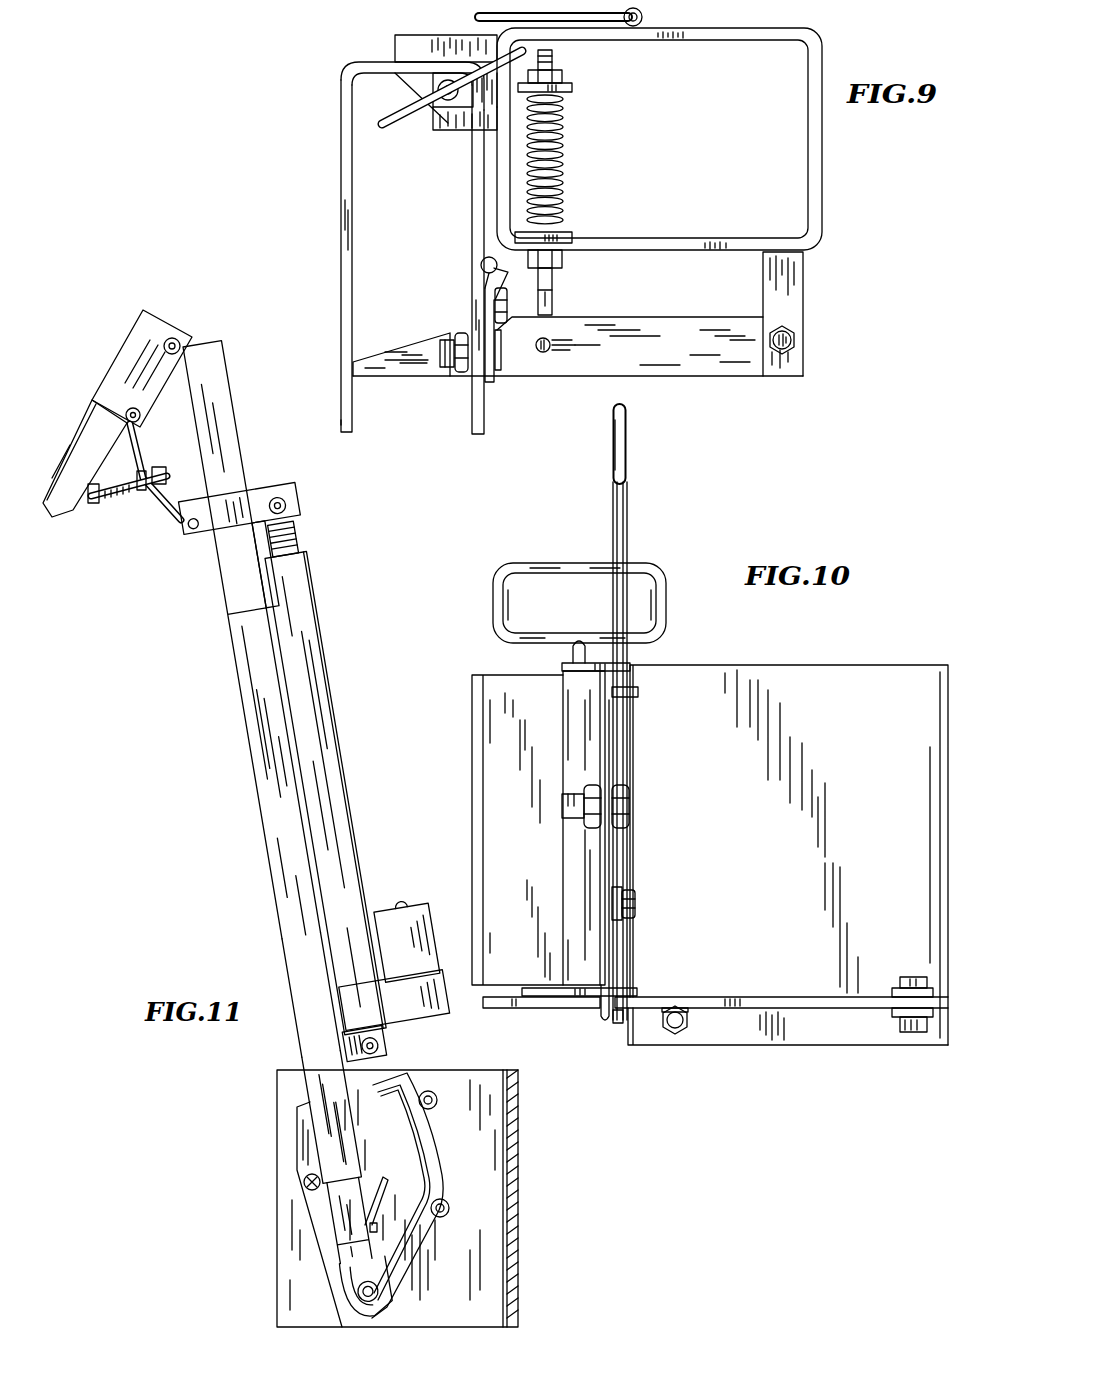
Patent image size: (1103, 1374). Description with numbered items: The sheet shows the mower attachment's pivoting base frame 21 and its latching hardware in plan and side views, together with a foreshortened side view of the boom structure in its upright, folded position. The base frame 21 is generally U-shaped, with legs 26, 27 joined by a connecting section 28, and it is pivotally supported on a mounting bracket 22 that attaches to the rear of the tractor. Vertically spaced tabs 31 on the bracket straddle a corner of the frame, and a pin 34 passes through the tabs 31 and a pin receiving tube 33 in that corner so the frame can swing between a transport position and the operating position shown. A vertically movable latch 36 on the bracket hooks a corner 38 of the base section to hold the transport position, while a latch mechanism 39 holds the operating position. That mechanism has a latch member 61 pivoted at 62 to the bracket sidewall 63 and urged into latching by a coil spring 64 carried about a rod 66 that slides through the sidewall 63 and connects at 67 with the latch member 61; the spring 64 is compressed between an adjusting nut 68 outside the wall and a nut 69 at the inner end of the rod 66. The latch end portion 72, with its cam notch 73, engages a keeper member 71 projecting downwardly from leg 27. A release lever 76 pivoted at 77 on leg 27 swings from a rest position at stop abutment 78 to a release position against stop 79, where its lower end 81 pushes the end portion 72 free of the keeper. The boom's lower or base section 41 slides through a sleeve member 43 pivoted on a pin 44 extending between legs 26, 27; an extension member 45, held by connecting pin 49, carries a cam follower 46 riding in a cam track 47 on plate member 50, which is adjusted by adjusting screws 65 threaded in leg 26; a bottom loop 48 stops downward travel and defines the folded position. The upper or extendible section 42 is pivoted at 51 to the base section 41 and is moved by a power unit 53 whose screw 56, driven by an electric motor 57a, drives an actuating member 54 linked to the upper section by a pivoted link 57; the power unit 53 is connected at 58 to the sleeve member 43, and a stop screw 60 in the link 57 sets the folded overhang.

In FIG. 9, the base frame 21 is at (322, 205).
In FIG. 9, the mounting bracket 22 is at (835, 68).
In FIG. 9, the leg 26 is at (342, 280).
In FIG. 9, the leg 27 is at (473, 213).
In FIG. 9, the connecting section 28 is at (390, 62).
In FIG. 9, the tabs 31 is at (458, 130).
In FIG. 10, the pin receiving tube 33 is at (575, 848).
In FIG. 9, the pin 34 is at (390, 130).
In FIG. 10, the pin 34 is at (572, 568).
In FIG. 9, the latch 36 is at (648, 17).
In FIG. 9, the corner 38 is at (358, 65).
In FIG. 9, the latch mechanism 39 is at (645, 345).
In FIG. 10, the latch mechanism 39 is at (785, 997).
In FIG. 11, the lower or base section 41 is at (298, 1025).
In FIG. 11, the upper or extendible section 42 is at (80, 440).
In FIG. 11, the sleeve member 43 is at (312, 1087).
In FIG. 11, the pin 44 is at (303, 1182).
In FIG. 11, the extension member 45 is at (333, 1263).
In FIG. 11, the cam follower 46 is at (385, 1308).
In FIG. 11, the cam track 47 is at (428, 1168).
In FIG. 11, the bottom loop 48 is at (338, 1300).
In FIG. 11, the connecting pin 49 is at (330, 1238).
In FIG. 11, the plate member 50 is at (297, 1148).
In FIG. 11, the pivotal connection 51 is at (172, 338).
In FIG. 11, the power unit 53 is at (322, 728).
In FIG. 11, the actuating member 54 is at (225, 605).
In FIG. 11, the screw 56 is at (300, 537).
In FIG. 11, the link or lever 57 is at (167, 507).
In FIG. 11, the electric motor 57a is at (407, 900).
In FIG. 11, the connection 58 is at (296, 500).
In FIG. 11, the stop screw 60 is at (97, 502).
In FIG. 9, the latch member 61 is at (680, 355).
In FIG. 10, the latch member 61 is at (740, 997).
In FIG. 9, the pivot 62 is at (790, 342).
In FIG. 10, the pivot 62 is at (905, 985).
In FIG. 9, the sidewall 63 is at (738, 240).
In FIG. 10, the sidewall 63 is at (747, 680).
In FIG. 9, the coil spring 64 is at (565, 155).
In FIG. 11, the adjusting screws 65 is at (438, 1103).
In FIG. 9, the rod 66 is at (552, 285).
In FIG. 10, the rod 66 is at (668, 1035).
In FIG. 9, the connection 67 is at (543, 353).
In FIG. 9, the adjusting nut 68 is at (568, 238).
In FIG. 10, the adjusting nut 68 is at (660, 1015).
In FIG. 9, the nut 69 is at (560, 72).
In FIG. 10, the keeper member 71 is at (601, 1021).
In FIG. 9, the end portion 72 is at (405, 365).
In FIG. 10, the end portion 72 is at (497, 997).
In FIG. 9, the cam notch 73 is at (458, 318).
In FIG. 10, the release lever 76 is at (622, 530).
In FIG. 10, the pivot 77 is at (634, 900).
In FIG. 10, the stop abutment 78 is at (628, 805).
In FIG. 9, the stop 79 is at (548, 266).
In FIG. 10, the stop 79 is at (638, 700).
In FIG. 10, the lower end 81 is at (614, 1028).